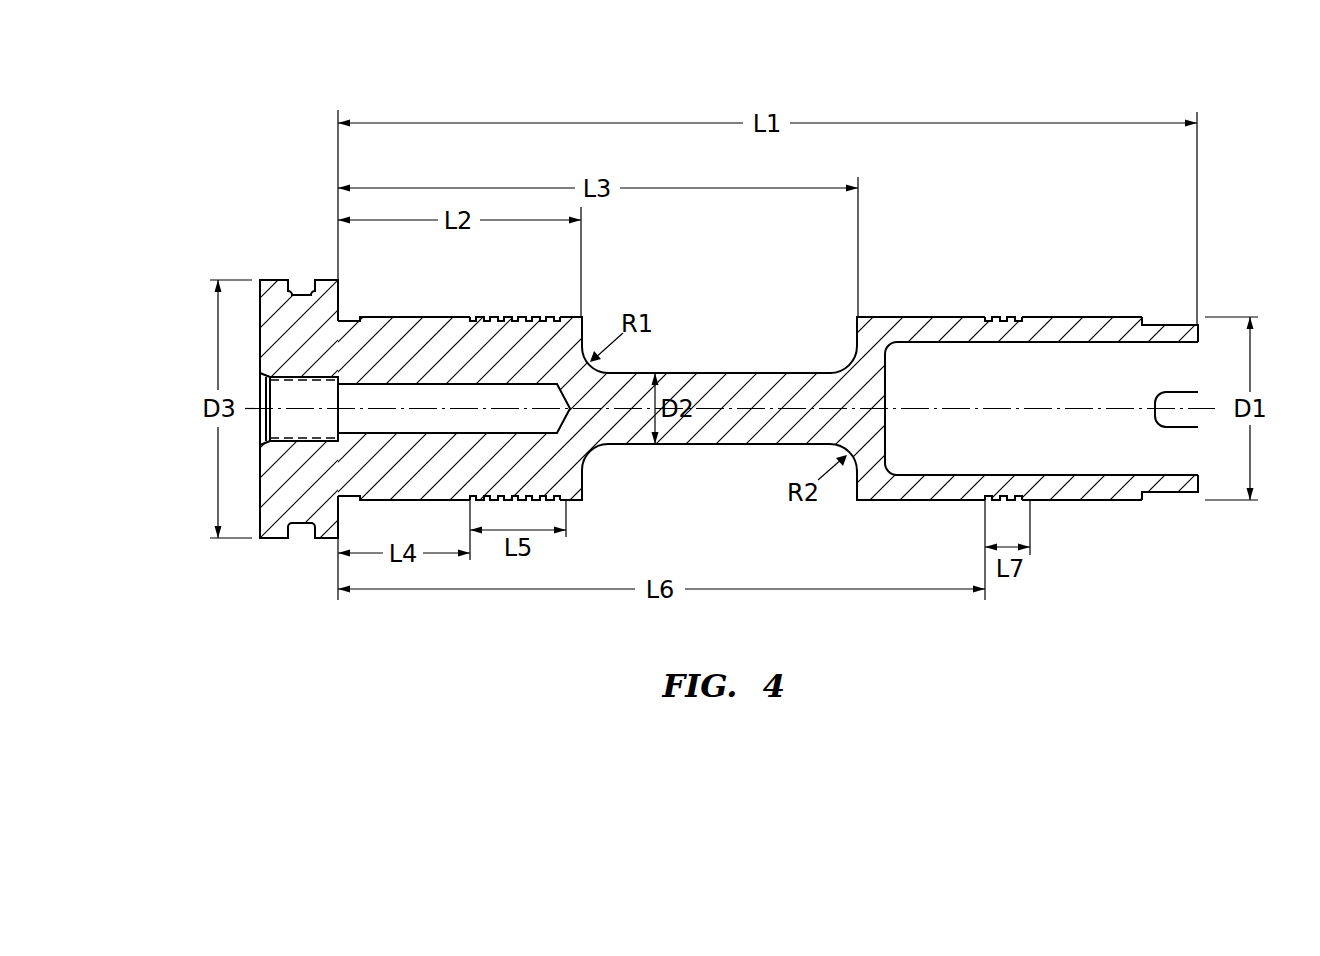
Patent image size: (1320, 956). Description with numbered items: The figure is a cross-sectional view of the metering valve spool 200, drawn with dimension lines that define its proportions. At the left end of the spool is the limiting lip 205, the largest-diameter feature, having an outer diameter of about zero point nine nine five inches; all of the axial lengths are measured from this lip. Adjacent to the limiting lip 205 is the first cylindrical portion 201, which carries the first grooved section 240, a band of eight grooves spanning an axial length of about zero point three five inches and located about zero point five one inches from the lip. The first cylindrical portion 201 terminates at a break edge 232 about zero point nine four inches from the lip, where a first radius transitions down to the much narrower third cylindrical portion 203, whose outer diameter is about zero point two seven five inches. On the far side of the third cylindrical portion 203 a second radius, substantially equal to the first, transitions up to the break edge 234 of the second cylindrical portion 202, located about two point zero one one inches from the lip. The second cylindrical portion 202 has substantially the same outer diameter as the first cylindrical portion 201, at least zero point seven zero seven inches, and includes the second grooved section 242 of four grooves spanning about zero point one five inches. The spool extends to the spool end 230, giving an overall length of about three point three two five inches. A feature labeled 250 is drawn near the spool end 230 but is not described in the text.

The metering valve spool 200 is at (231, 113).
The first cylindrical portion 201 is at (378, 317).
The second cylindrical portion 202 is at (1095, 328).
The third cylindrical portion 203 is at (730, 373).
The limiting lip 205 is at (277, 280).
The spool end 230 is at (1197, 322).
The break edge 232 is at (583, 317).
The break edge 234 is at (857, 500).
The first grooved section 240 is at (486, 307).
The second grooved section 242 is at (993, 307).
The slot 250 is at (1022, 408).